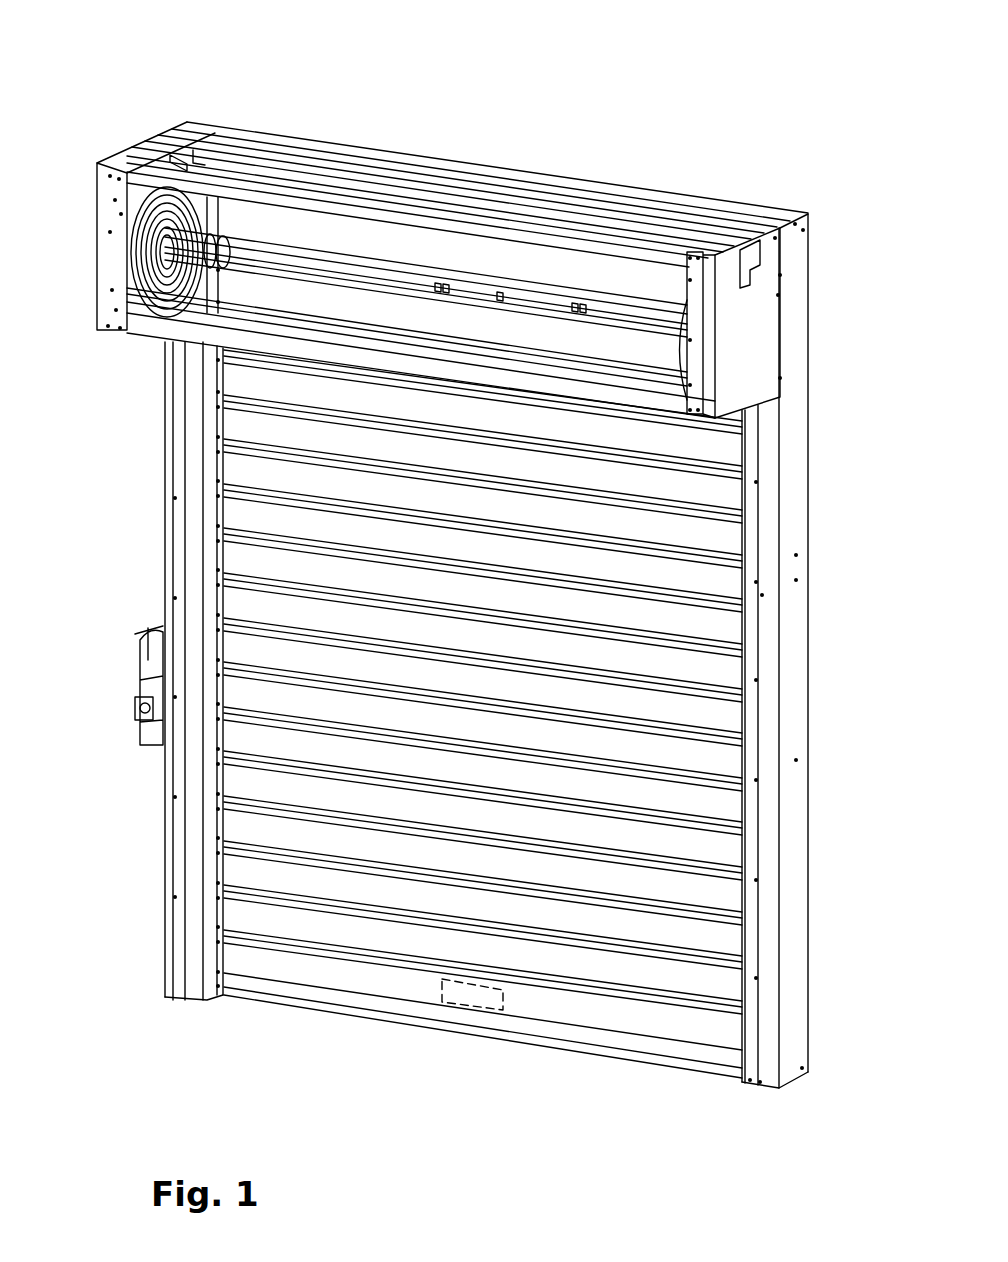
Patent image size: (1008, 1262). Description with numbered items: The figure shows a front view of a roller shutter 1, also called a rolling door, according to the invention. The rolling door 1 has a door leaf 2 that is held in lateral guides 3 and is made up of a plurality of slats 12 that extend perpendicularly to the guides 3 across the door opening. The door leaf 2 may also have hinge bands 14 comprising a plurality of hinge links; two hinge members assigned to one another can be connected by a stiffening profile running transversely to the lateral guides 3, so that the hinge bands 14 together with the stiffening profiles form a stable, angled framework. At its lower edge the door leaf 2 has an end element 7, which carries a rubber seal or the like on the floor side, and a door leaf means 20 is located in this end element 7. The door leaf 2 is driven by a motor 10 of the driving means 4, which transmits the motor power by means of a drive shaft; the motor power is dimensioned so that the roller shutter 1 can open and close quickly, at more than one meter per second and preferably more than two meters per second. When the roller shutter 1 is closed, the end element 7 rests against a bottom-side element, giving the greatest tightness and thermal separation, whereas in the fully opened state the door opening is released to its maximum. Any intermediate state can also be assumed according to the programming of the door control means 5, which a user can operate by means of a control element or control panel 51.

The roller shutter 1 is at (621, 145).
The door leaf 2 is at (528, 1057).
The lateral guides 3 is at (190, 543).
The driving means 4 is at (125, 342).
The door control means 5 is at (128, 658).
The end element 7 is at (605, 1044).
The motor 10 is at (140, 250).
The slats 12 is at (716, 538).
The hinge bands 14 is at (217, 822).
The door leaf means 20 is at (467, 997).
The control panel 51 is at (143, 712).